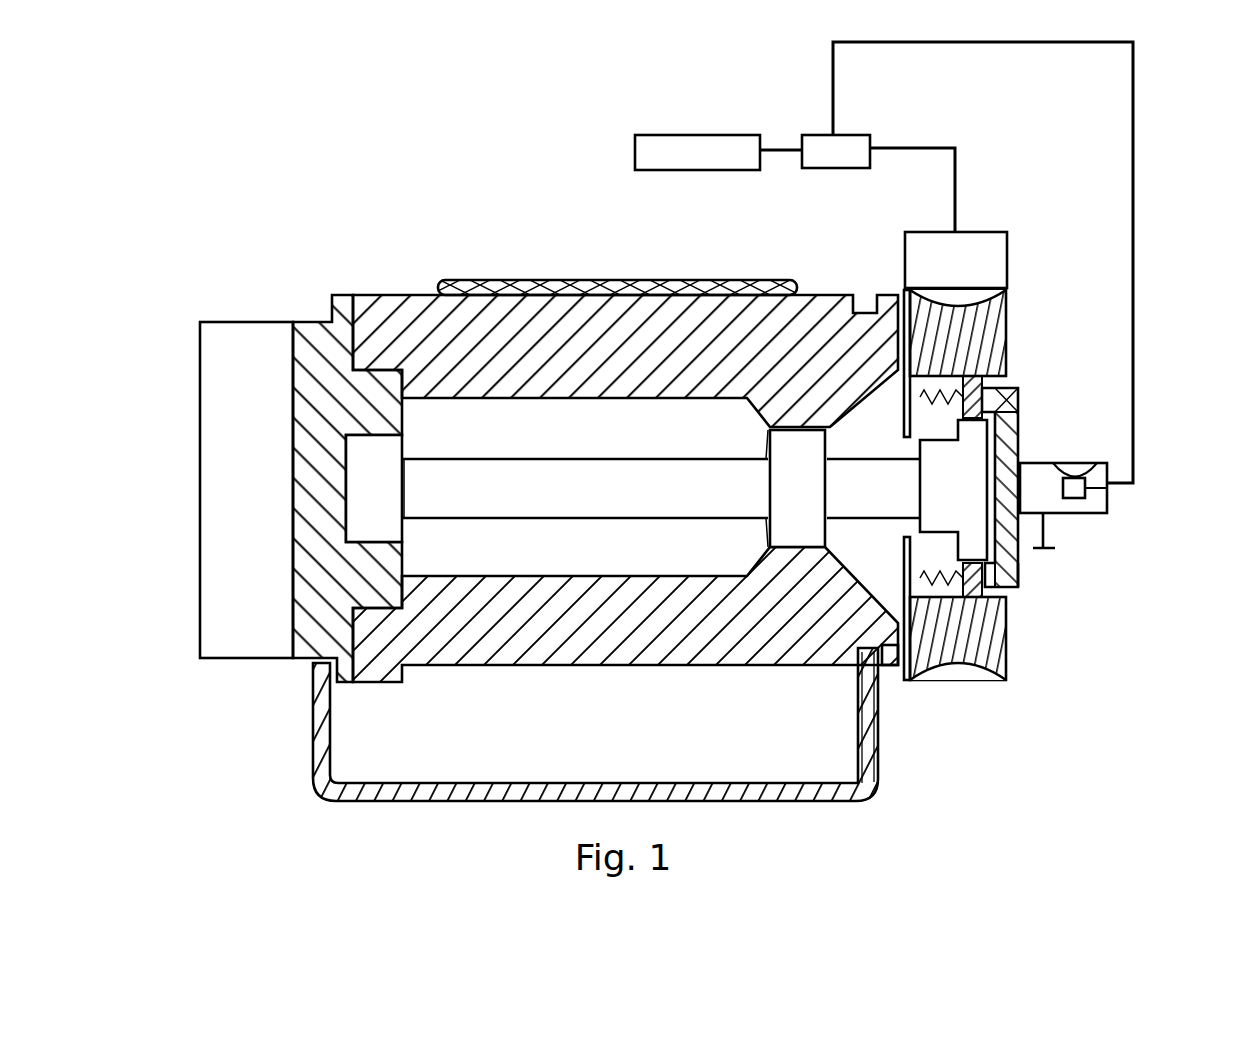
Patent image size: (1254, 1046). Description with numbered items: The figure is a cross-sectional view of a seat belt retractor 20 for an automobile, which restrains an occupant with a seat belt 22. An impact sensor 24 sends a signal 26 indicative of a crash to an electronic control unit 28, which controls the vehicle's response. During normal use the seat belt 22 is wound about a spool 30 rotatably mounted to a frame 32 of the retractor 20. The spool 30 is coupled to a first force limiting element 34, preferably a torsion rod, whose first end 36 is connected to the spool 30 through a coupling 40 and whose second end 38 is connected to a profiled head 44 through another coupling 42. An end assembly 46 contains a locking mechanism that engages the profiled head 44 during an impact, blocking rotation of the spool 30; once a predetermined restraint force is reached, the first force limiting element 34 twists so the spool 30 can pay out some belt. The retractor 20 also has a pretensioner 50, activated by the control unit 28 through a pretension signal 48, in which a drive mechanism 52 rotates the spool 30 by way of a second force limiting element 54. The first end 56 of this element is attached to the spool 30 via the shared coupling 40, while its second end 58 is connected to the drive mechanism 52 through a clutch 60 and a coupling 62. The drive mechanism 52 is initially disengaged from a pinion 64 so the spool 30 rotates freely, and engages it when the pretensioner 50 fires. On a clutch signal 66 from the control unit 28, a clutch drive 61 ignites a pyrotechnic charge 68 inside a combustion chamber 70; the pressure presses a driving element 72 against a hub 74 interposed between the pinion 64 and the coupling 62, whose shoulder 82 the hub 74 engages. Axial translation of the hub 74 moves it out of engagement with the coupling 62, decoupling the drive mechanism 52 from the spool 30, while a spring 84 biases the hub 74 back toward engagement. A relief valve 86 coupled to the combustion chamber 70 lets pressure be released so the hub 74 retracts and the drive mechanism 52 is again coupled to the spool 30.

The retractor 20 is at (265, 135).
The seat belt 22 is at (567, 287).
The impact sensor 24 is at (697, 135).
The signal 26 is at (783, 150).
The electronic control unit 28 is at (836, 168).
The spool 30 is at (450, 350).
The frame 32 is at (755, 793).
The first force limiting element 34 is at (583, 490).
The first end 36 is at (762, 508).
The second end 38 is at (408, 497).
The coupling 40 is at (785, 523).
The coupling 42 is at (365, 527).
The profiled head 44 is at (317, 505).
The end assembly 46 is at (200, 380).
The pretension signal 48 is at (893, 148).
The pretensioner 50 is at (1005, 190).
The drive mechanism 52 is at (1007, 262).
The second force limiting element 54 is at (885, 652).
The first end 56 is at (870, 500).
The second end 58 is at (910, 497).
The clutch 60 is at (1030, 599).
The clutch drive 61 is at (1125, 508).
The coupling 62 is at (1017, 560).
The pinion 64 is at (1000, 335).
The clutch signal 66 is at (1137, 253).
The pyrotechnic charge 68 is at (1107, 490).
The combustion chamber 70 is at (1090, 465).
The driving element 72 is at (1013, 388).
The hub 74 is at (982, 375).
The shoulder 82 is at (977, 433).
The spring 84 is at (985, 397).
The relief valve 86 is at (1048, 530).